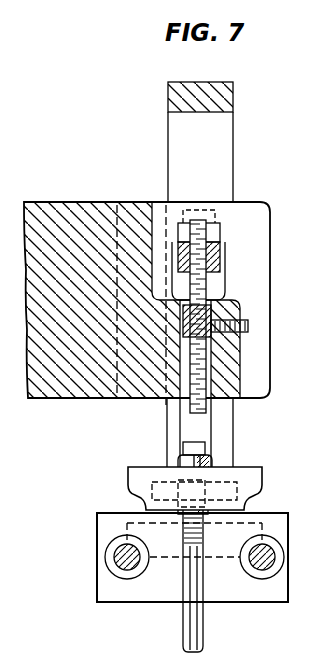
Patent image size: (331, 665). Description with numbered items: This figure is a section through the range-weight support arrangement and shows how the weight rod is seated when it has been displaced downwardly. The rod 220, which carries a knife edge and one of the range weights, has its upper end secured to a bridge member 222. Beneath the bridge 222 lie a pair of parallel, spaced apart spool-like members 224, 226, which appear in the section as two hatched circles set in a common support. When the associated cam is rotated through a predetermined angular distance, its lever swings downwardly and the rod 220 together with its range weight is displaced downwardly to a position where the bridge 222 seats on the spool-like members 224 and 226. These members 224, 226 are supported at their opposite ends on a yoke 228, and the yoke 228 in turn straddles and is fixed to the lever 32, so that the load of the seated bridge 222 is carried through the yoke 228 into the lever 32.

The lever 32 is at (97, 204).
The rod 220 is at (204, 632).
The bridge member 222 is at (258, 471).
The spool-like member 224 is at (114, 568).
The spool-like member 226 is at (272, 572).
The yoke 228 is at (235, 131).